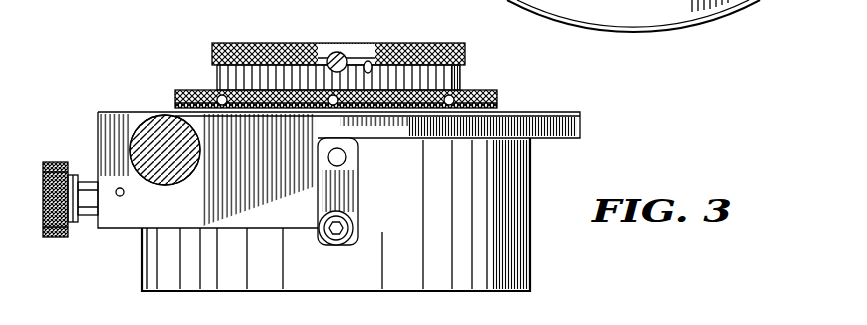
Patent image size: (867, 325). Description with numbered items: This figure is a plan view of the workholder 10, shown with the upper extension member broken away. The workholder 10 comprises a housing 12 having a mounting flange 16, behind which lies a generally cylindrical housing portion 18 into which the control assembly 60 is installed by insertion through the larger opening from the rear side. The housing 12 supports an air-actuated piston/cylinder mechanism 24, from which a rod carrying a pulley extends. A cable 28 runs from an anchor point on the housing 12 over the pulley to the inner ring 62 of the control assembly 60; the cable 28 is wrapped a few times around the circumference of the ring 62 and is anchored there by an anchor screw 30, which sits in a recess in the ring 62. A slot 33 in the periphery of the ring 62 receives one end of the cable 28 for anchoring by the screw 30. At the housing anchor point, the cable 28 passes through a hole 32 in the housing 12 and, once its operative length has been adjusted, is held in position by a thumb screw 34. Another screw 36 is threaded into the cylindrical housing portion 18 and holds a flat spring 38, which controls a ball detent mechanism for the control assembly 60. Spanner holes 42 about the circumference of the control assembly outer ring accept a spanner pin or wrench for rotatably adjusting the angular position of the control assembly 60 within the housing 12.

The workholder 10 is at (616, 172).
The housing 12 is at (116, 108).
The mounting flange 16 is at (562, 139).
The cylindrical housing portion 18 is at (536, 236).
The piston/cylinder mechanism 24 is at (163, 128).
The cable 28 is at (125, 196).
The anchor screw 30 is at (338, 52).
The hole 32 is at (117, 198).
The slot 33 is at (370, 61).
The thumb screw 34 is at (62, 162).
The screw 36 is at (338, 246).
The flat spring 38 is at (360, 194).
The spanner holes 42 is at (328, 96).
The control assembly 60 is at (504, 96).
The inner ring 62 is at (297, 43).